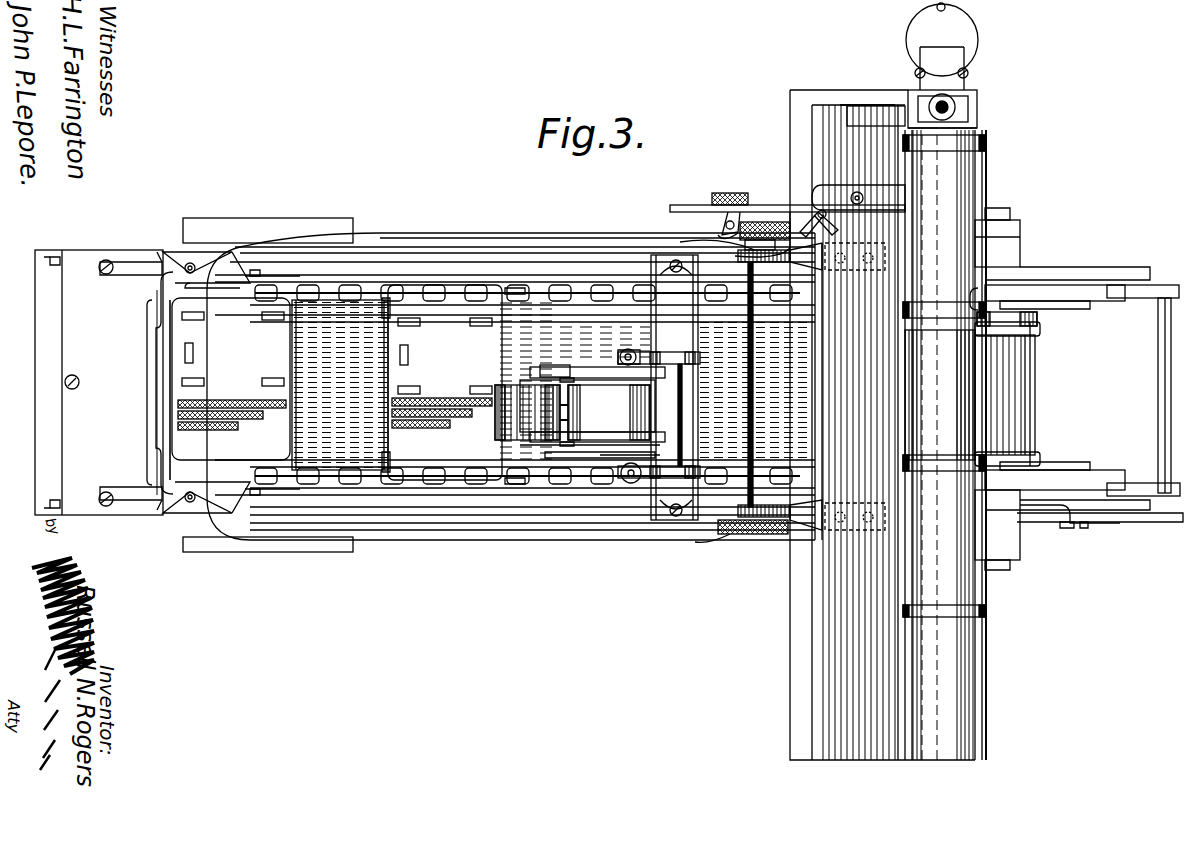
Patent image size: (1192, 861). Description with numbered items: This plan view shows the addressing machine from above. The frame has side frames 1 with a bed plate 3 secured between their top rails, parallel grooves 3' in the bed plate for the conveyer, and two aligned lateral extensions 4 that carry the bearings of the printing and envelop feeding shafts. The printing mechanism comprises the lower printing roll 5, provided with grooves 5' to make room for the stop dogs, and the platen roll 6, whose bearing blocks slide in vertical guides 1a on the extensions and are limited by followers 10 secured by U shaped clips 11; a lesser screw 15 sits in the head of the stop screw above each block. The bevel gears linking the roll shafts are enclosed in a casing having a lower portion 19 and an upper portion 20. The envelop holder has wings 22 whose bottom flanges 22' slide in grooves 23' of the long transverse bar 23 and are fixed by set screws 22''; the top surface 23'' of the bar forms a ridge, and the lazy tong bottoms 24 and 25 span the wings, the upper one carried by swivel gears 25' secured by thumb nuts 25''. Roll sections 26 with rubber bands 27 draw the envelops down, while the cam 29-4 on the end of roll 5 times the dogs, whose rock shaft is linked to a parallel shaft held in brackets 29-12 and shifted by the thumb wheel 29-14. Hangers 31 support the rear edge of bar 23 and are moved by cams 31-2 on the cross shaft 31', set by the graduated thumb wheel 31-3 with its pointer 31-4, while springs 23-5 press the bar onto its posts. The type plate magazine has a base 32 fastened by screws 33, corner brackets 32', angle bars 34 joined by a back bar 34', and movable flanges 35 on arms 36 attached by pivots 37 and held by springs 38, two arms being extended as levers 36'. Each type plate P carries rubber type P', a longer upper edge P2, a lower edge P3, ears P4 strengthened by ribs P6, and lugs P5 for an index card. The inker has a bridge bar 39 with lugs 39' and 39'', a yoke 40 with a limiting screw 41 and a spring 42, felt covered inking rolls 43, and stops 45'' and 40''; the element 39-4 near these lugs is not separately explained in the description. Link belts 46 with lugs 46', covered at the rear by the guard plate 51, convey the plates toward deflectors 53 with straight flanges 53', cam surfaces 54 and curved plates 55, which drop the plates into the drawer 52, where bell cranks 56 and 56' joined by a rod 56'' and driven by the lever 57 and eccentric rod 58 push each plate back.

The side frames 1 is at (512, 248).
The vertical guides 1a is at (965, 112).
The bed plate 3 is at (340, 385).
The grooves 3' is at (527, 360).
The lateral extensions 4 is at (792, 110).
The printing roll 5 is at (1017, 395).
The grooves 5' is at (1024, 394).
The platen roll 6 is at (940, 395).
The followers 10 is at (977, 126).
The U shaped clips 11 is at (955, 108).
The lesser screw 15 is at (947, 104).
The lower casing portion 19 is at (875, 100).
The upper casing portion 20 is at (957, 32).
The wings 22 is at (787, 196).
The bottom flanges 22' is at (858, 180).
The set screws 22'' is at (873, 199).
The transverse bar 23 is at (859, 432).
The grooves 23' is at (843, 420).
The top surface 23'' is at (863, 465).
The springs 23-5 is at (865, 116).
The fixed bottom 24 is at (835, 228).
The movable bottom 25 is at (700, 225).
The swivel gears 25' is at (762, 232).
The thumb nuts 25'' is at (706, 193).
The roll sections 26 is at (960, 202).
The rubber bands 27 is at (982, 145).
The cam 29-4 is at (1037, 318).
The brackets 29-12 is at (690, 553).
The graduated thumb wheel 29-14 is at (697, 245).
The hangers 31 is at (836, 400).
The cross shaft 31' is at (769, 384).
The cams 31-2 is at (795, 386).
The graduated thumb wheel 31-3 is at (730, 534).
The pointer 31-4 is at (747, 540).
The base 32 is at (99, 382).
The corner brackets 32' is at (138, 383).
The screws 33 is at (74, 390).
The angle bars 34 is at (180, 400).
The back bar 34' is at (135, 390).
The movable flanges 35 is at (262, 282).
The arms 36 is at (188, 387).
The levers 36' is at (97, 360).
The pivots 37 is at (191, 262).
The springs 38 is at (178, 243).
The bridge bar 39 is at (675, 387).
The lugs 39' is at (674, 404).
The lugs 39'' is at (615, 488).
The roller 39-4 is at (638, 352).
The yoke 40 is at (592, 386).
The stop 40'' is at (605, 425).
The limiting screw 41 is at (578, 478).
The roller 42 is at (618, 357).
The inking rolls 43 is at (550, 410).
The stop 45'' is at (590, 510).
The link belts 46 is at (529, 415).
The lugs 46' is at (372, 385).
The guard plate 51 is at (35, 515).
The plate drawer 52 is at (1109, 403).
The deflectors 53 is at (1055, 365).
The straight flange 53' is at (1073, 388).
The cam surface 54 is at (985, 285).
The curved plates 55 is at (987, 655).
The bell crank 56 is at (1143, 517).
The bell crank 56' is at (1143, 370).
The rod 56'' is at (1140, 368).
The lever 57 is at (1155, 525).
The eccentric rod 58 is at (1058, 527).
The type plate P is at (371, 382).
The type P' is at (328, 440).
The upper edge P2 is at (180, 392).
The lower edge P3 is at (505, 372).
The ears P4 is at (240, 475).
The lugs P5 is at (258, 320).
The ribs P6 is at (215, 285).